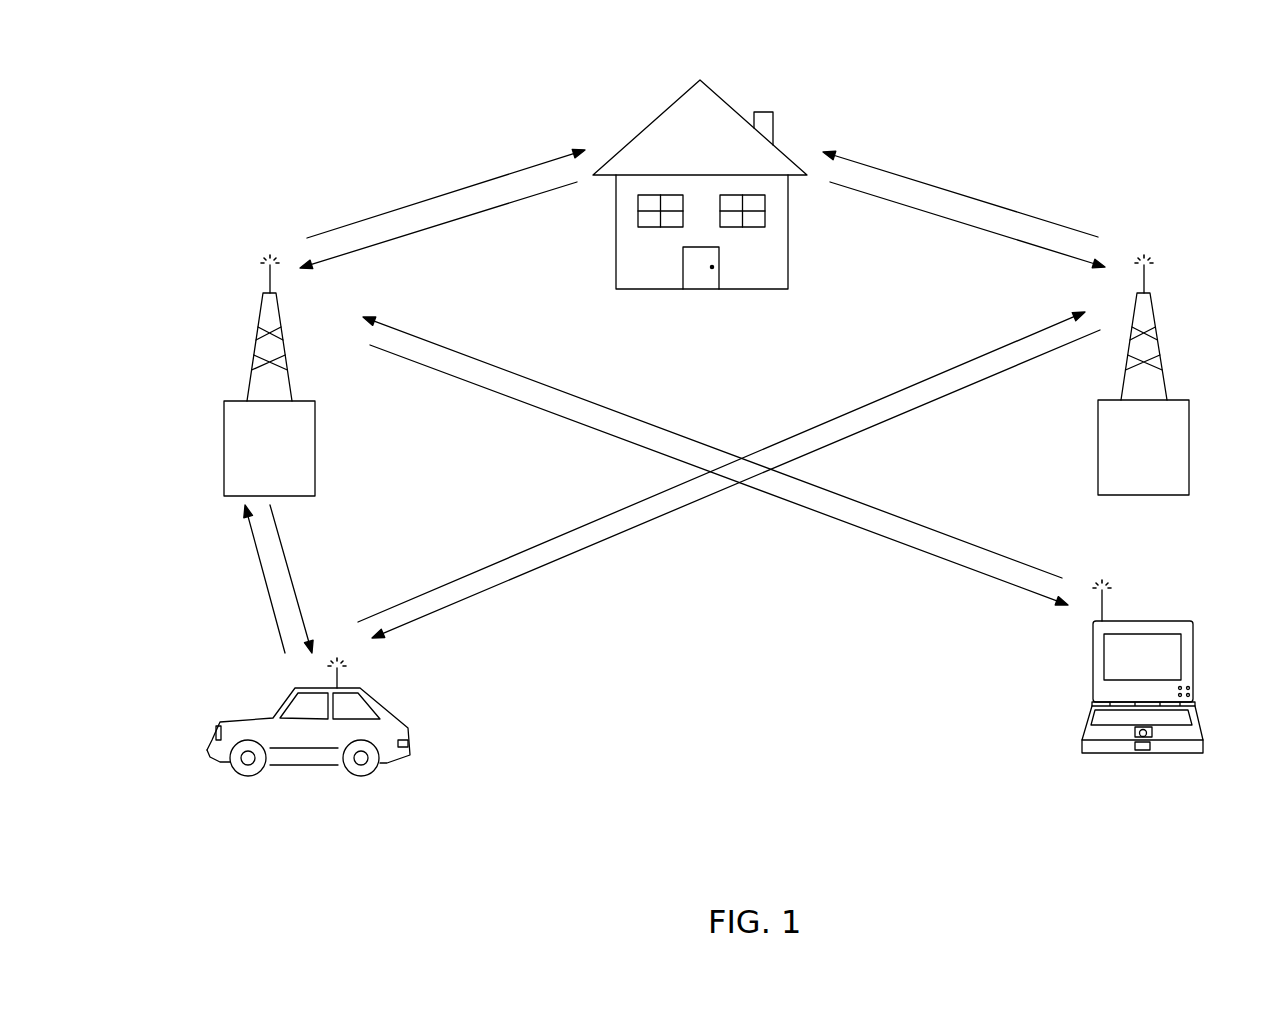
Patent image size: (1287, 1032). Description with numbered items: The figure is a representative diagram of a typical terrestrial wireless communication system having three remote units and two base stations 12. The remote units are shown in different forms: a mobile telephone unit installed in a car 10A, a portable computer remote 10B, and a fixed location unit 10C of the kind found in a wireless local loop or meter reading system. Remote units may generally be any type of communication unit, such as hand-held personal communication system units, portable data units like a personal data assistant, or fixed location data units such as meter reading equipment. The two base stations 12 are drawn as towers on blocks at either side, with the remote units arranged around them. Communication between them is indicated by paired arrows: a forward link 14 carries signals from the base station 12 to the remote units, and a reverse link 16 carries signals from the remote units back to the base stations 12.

The mobile telephone unit installed in a car 10A is at (362, 688).
The portable computer remote 10B is at (1176, 622).
The fixed location unit 10C is at (723, 97).
The base station 12 is at (305, 400).
The forward link 14 is at (450, 193).
The reverse link 16 is at (397, 238).